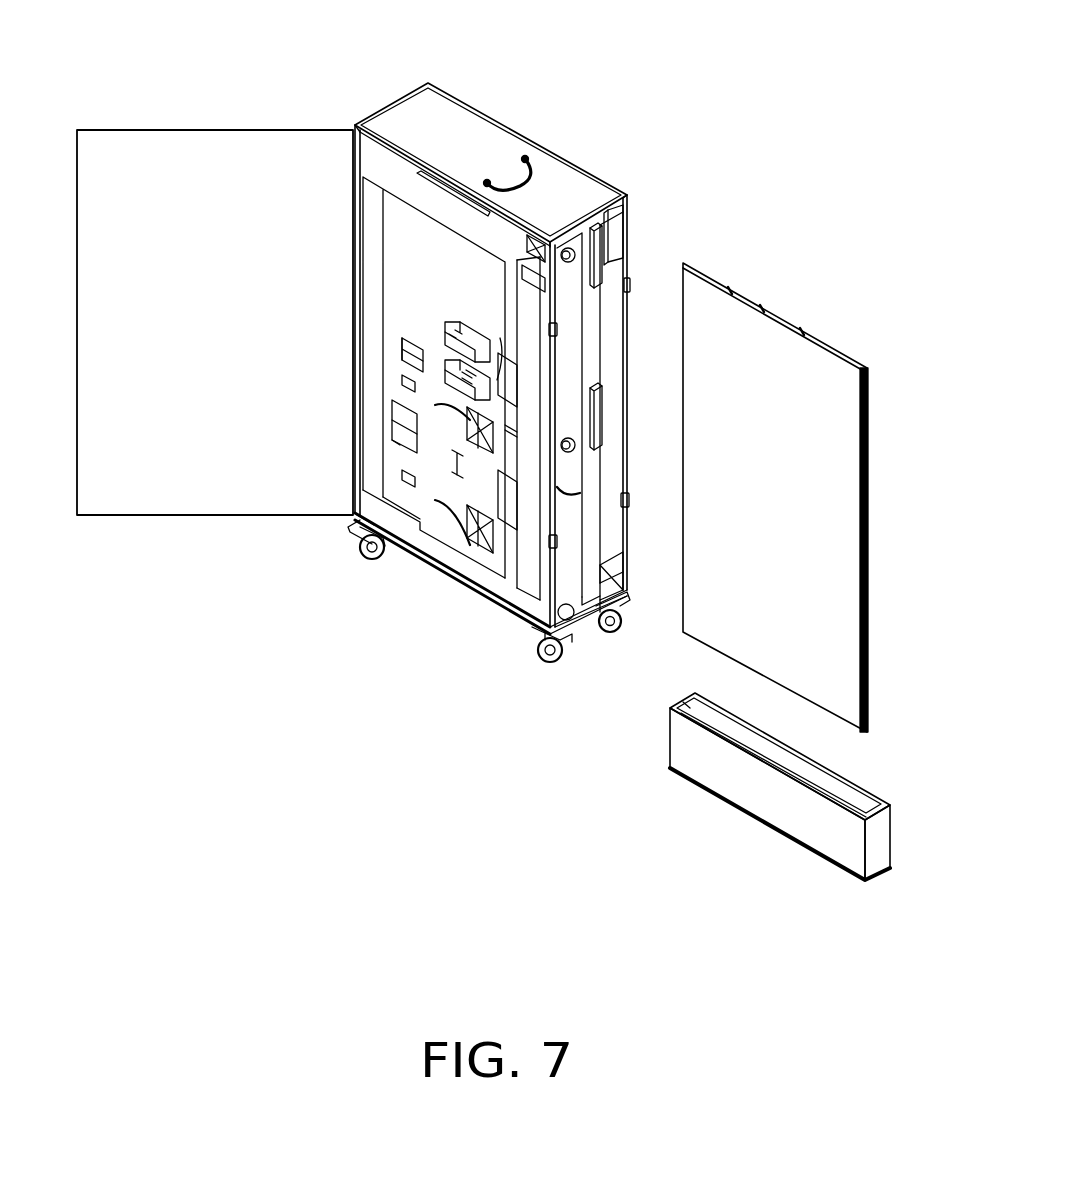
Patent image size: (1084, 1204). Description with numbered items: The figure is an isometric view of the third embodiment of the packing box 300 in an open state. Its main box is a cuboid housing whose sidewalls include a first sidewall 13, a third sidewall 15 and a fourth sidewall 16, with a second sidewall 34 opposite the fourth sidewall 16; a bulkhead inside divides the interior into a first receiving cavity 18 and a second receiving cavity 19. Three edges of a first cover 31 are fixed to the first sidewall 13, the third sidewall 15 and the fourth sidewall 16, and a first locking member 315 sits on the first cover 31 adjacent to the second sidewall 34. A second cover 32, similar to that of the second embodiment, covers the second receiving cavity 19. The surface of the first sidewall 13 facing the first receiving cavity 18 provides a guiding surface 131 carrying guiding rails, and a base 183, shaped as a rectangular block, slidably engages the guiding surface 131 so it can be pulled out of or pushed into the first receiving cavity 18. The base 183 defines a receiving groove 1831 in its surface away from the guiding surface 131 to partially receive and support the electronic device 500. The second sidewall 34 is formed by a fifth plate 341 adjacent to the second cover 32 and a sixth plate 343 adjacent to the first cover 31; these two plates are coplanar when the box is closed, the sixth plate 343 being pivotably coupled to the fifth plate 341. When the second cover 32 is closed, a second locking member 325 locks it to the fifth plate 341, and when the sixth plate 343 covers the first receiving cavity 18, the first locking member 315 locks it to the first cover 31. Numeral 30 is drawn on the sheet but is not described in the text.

The packing box 300 is at (316, 44).
The fourth sidewall 16 is at (383, 108).
The third sidewall 15 is at (430, 120).
The second cover 32 is at (160, 130).
The second receiving cavity 19 is at (420, 283).
The first cover 31 is at (628, 218).
The first receiving cavity 18 is at (610, 306).
The electronic device 500 is at (762, 358).
The first locking member 315 is at (630, 503).
The wheel 30 is at (357, 540).
The first sidewall 13 is at (430, 562).
The second locking member 325 is at (545, 542).
The guiding surface 131 is at (623, 585).
The sixth plate 343 is at (588, 590).
The fifth plate 341 is at (532, 627).
The second sidewall 34 is at (630, 702).
The receiving groove 1831 is at (845, 800).
The base 183 is at (787, 808).